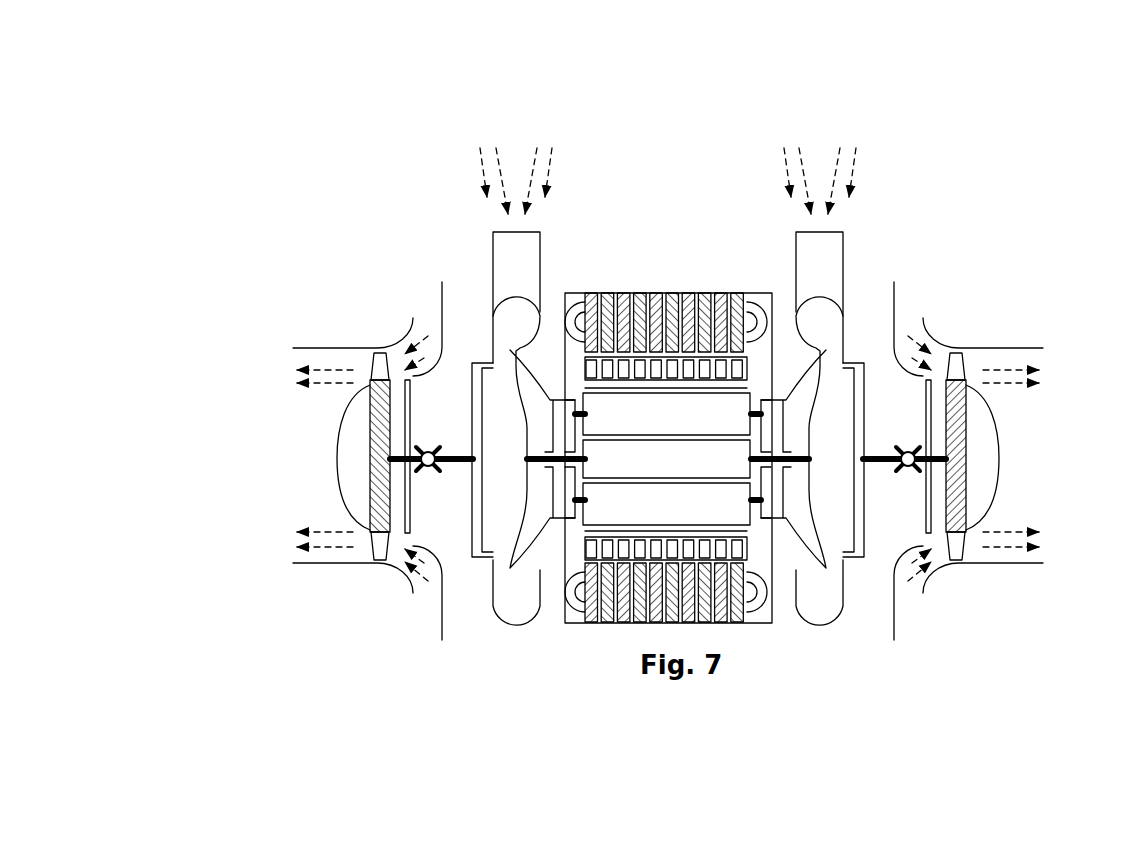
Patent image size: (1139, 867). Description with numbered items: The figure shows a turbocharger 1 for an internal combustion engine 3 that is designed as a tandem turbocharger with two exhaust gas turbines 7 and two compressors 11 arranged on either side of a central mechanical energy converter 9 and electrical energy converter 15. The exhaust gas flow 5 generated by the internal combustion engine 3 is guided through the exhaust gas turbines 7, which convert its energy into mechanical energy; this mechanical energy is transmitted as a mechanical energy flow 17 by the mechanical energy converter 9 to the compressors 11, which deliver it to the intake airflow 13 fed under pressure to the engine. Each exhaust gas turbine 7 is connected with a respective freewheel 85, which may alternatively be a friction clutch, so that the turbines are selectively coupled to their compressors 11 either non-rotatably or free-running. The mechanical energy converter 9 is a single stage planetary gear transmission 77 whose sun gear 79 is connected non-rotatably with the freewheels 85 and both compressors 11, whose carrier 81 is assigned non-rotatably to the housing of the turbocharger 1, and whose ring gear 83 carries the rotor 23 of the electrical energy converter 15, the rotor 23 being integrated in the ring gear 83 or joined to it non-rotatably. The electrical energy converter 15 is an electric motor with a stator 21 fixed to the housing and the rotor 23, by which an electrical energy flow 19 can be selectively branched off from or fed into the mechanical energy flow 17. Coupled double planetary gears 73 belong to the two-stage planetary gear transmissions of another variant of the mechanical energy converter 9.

The turbocharger 1 is at (338, 168).
The internal combustion engine 3 is at (1022, 304).
The exhaust gas flow 5 is at (275, 544).
The exhaust gas turbine 7 is at (350, 468).
The mechanical energy converter 9 is at (677, 470).
The compressor 11 is at (508, 320).
The intake airflow 13 is at (534, 139).
The electrical energy converter 15 is at (730, 621).
The mechanical energy flow 17 is at (469, 440).
The electrical energy flow 19 is at (726, 285).
The stator 21 is at (592, 296).
The rotor 23 is at (657, 370).
The double planetary gears 73 is at (613, 505).
The single stage planetary gear transmission 77 is at (585, 527).
The sun gear 79 is at (723, 453).
The carrier 81 is at (773, 393).
The ring gear 83 is at (772, 300).
The freewheel 85 is at (432, 470).